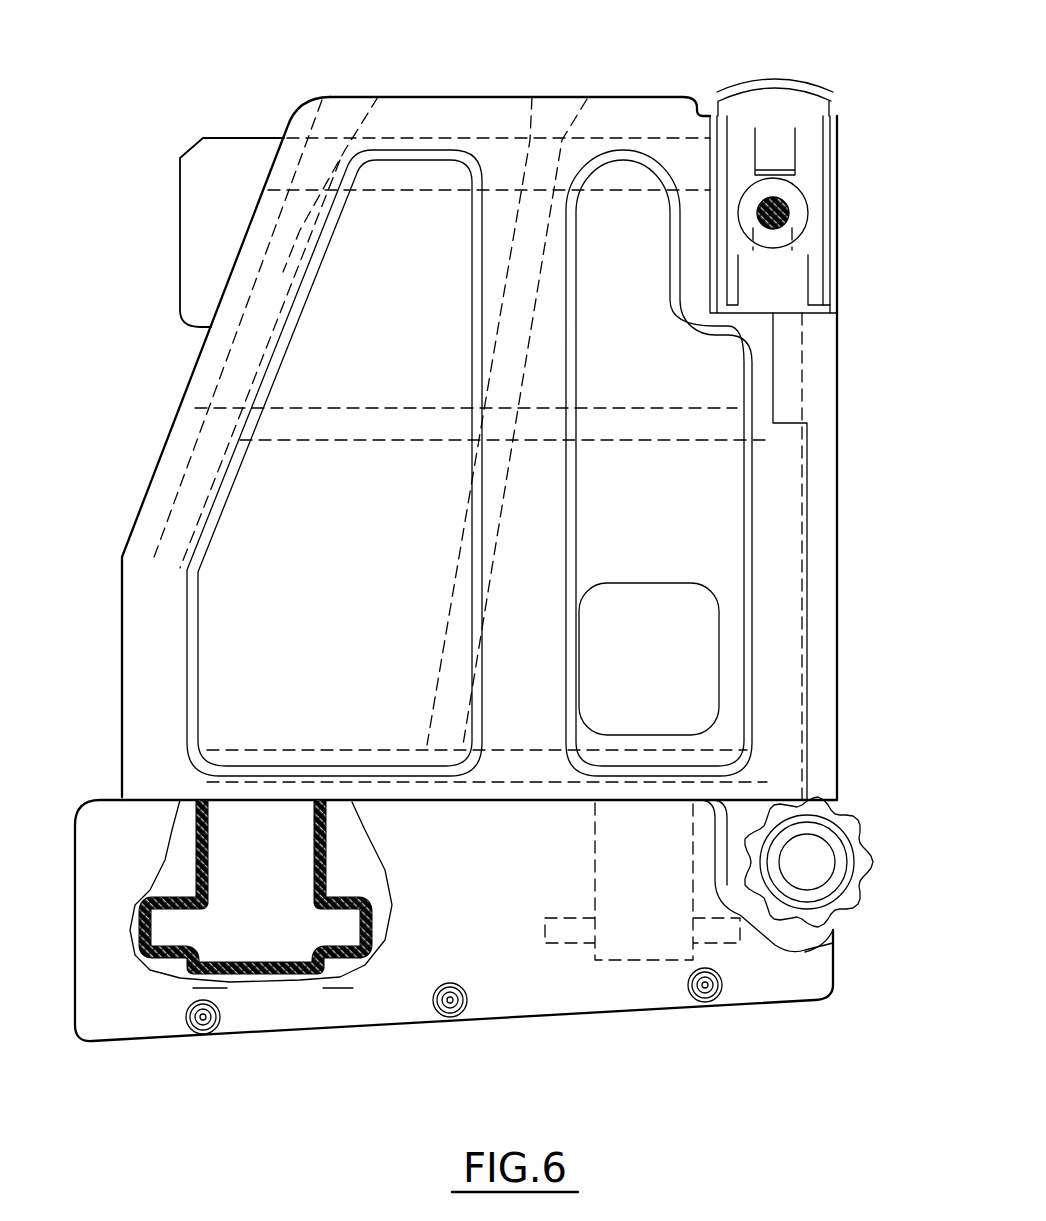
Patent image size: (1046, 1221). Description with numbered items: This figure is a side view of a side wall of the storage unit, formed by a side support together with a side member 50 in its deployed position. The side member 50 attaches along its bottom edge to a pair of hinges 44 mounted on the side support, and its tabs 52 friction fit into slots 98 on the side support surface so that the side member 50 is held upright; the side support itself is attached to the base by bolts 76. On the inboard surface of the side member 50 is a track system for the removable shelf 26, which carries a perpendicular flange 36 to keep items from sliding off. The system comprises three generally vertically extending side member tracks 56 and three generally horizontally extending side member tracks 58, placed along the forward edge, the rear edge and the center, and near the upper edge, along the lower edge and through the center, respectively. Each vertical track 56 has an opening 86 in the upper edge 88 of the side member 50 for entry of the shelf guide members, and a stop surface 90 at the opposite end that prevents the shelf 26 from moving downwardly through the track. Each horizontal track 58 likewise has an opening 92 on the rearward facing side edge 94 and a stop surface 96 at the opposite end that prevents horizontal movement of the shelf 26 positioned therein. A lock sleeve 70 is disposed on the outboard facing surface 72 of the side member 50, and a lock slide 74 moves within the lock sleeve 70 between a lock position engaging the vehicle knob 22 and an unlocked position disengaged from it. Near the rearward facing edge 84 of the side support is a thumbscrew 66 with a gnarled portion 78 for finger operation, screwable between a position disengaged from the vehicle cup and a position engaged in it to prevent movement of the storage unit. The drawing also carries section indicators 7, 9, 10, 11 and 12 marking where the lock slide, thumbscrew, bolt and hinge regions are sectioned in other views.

The knob 22 is at (795, 198).
The removable shelf 26 is at (246, 132).
The flange 36 is at (193, 220).
The hinge 44 is at (355, 932).
The side member 50 is at (185, 355).
The tab 52 is at (280, 947).
The vertically extending side member track 56 is at (548, 230).
The horizontally extending side member track 58 is at (490, 187).
The thumbscrew 66 is at (862, 810).
The lock sleeve 70 is at (830, 147).
The outboard facing surface 72 is at (820, 860).
The lock slide 74 is at (717, 107).
The bolt 76 is at (190, 1030).
The gnarled portion 78 is at (857, 890).
The rearward facing edge 84 is at (840, 930).
The opening 86 is at (337, 97).
The upper edge 88 is at (410, 97).
The stop surface 90 is at (150, 568).
The opening 92 is at (838, 408).
The rearward facing side edge 94 is at (840, 537).
The stop surface 96 is at (207, 768).
The slot 98 is at (193, 863).
The section line 7- 7 is at (883, 97).
The section line 9- 9 is at (883, 213).
The section line 10- 10 is at (775, 800).
The section line 11- 11 is at (347, 1000).
The section line 12- 12 is at (63, 1007).